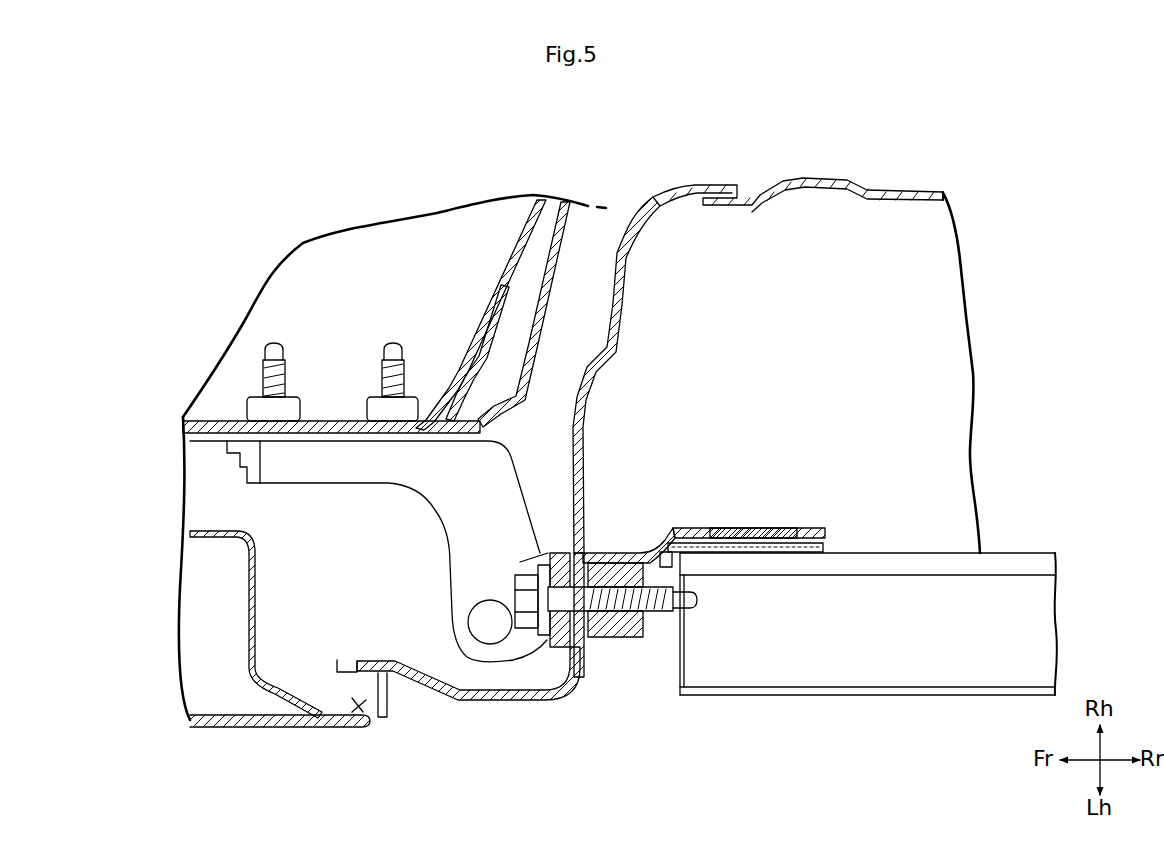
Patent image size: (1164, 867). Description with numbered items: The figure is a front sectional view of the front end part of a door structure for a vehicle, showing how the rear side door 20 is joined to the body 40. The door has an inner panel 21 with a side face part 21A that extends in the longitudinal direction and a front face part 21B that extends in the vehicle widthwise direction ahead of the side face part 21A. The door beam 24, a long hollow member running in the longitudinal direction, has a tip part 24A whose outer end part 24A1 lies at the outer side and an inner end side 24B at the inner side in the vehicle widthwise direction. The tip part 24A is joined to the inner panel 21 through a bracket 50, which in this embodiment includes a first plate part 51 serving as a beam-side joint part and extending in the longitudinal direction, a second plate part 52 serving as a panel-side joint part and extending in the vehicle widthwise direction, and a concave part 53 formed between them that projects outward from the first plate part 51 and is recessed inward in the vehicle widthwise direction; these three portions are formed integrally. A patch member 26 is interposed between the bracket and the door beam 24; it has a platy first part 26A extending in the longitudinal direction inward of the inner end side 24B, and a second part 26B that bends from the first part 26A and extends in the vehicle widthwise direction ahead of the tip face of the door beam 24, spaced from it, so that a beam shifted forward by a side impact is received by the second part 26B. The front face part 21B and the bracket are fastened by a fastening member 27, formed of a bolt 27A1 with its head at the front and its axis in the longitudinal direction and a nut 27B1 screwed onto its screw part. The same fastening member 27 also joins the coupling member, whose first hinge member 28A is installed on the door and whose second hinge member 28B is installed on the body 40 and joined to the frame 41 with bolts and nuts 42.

The rear side door 20 is at (943, 157).
The inner panel 21 is at (988, 395).
The side face part 21A is at (968, 490).
The front face part 21B is at (586, 443).
The door beam 24 is at (859, 635).
The tip part 24A is at (716, 667).
The outer end part 24A1 is at (681, 695).
The inner end side 24B is at (940, 553).
The patch member 26 is at (834, 541).
The first part 26A is at (805, 552).
The second part 26B is at (670, 560).
The fastening member 27 is at (621, 645).
The bolt 27A1 is at (586, 648).
The nut 27B1 is at (632, 632).
The first hinge member 28A is at (553, 645).
The second hinge member 28B is at (460, 562).
The body 40 is at (470, 318).
The frame 41 is at (347, 434).
The bolts and nuts 42 is at (368, 380).
The bracket 50 is at (737, 530).
The first plate part 51 is at (758, 528).
The second plate part 52 is at (575, 668).
The concave part 53 is at (614, 550).